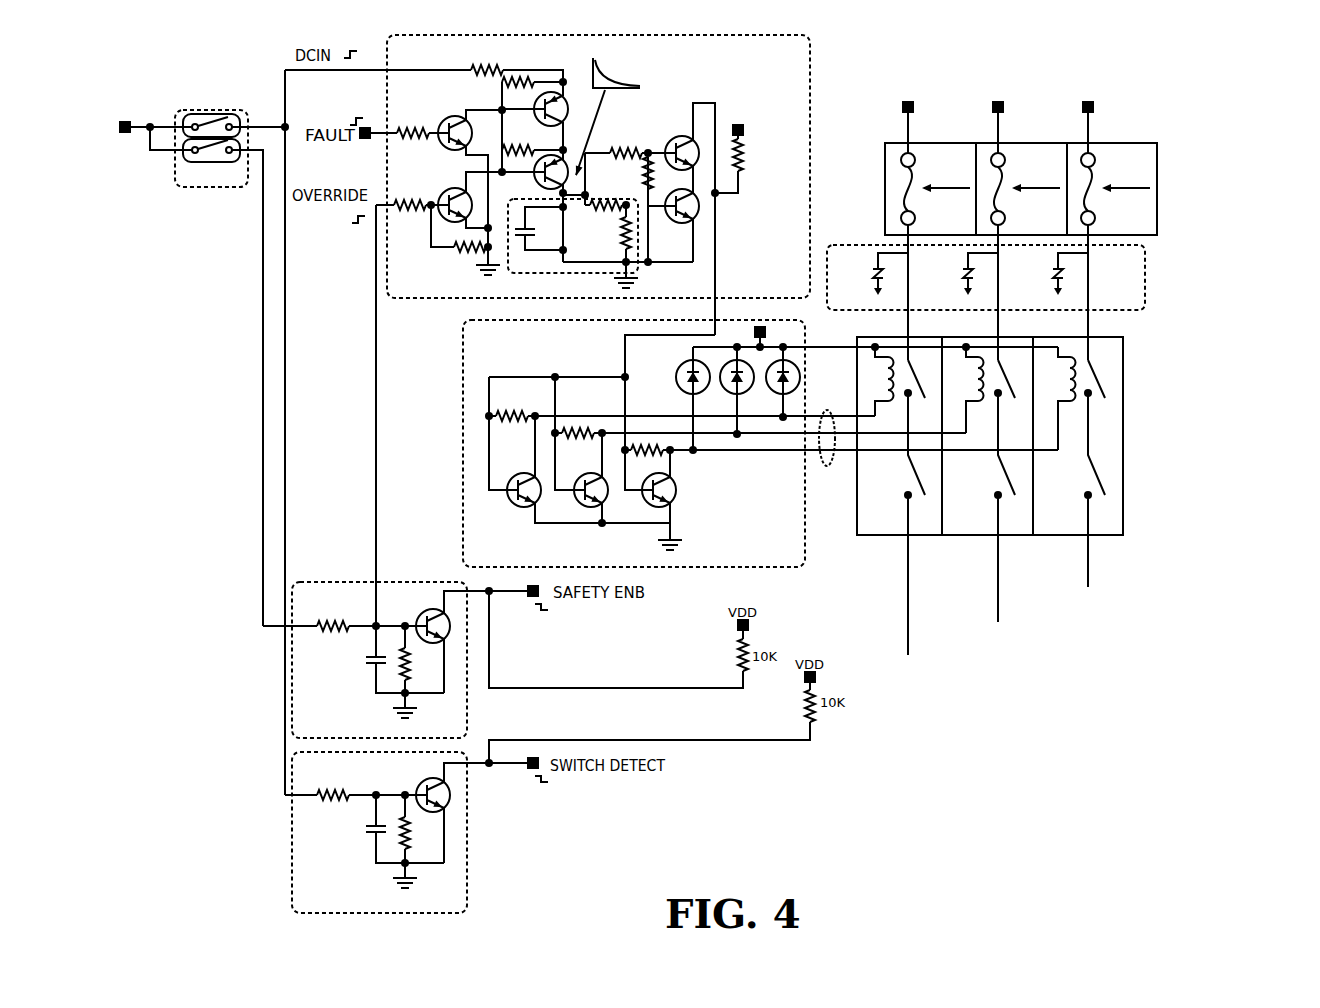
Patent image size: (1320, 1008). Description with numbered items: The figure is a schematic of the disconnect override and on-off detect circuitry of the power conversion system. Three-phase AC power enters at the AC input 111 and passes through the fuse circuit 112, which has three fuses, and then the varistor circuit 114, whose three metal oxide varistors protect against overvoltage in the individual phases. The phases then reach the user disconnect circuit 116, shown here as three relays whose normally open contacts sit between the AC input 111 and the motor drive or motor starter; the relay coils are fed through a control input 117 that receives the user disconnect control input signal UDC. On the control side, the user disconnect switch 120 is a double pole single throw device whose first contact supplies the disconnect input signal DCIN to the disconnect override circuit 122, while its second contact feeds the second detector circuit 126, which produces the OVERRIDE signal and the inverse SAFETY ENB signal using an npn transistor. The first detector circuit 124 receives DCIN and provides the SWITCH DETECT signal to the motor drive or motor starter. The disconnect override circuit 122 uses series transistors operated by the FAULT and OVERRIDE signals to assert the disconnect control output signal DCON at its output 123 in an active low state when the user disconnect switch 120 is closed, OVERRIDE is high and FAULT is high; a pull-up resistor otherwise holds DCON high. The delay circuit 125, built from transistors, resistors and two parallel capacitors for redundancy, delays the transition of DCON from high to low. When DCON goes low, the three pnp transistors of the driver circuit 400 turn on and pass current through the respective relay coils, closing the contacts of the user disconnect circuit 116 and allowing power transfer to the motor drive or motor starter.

The AC input 111 is at (894, 99).
The fuse circuit 112 is at (1159, 161).
The varistor circuit 114 is at (1147, 254).
The user disconnect circuit 116 is at (1124, 367).
The control input 117 is at (828, 468).
The user disconnect switch 120 is at (177, 114).
The disconnect override circuit 122 is at (547, 153).
The output 123 is at (718, 297).
The first detector circuit 124 is at (291, 856).
The delay circuit 125 is at (637, 269).
The second detector circuit 126 is at (340, 582).
The driver circuit 400 is at (463, 362).